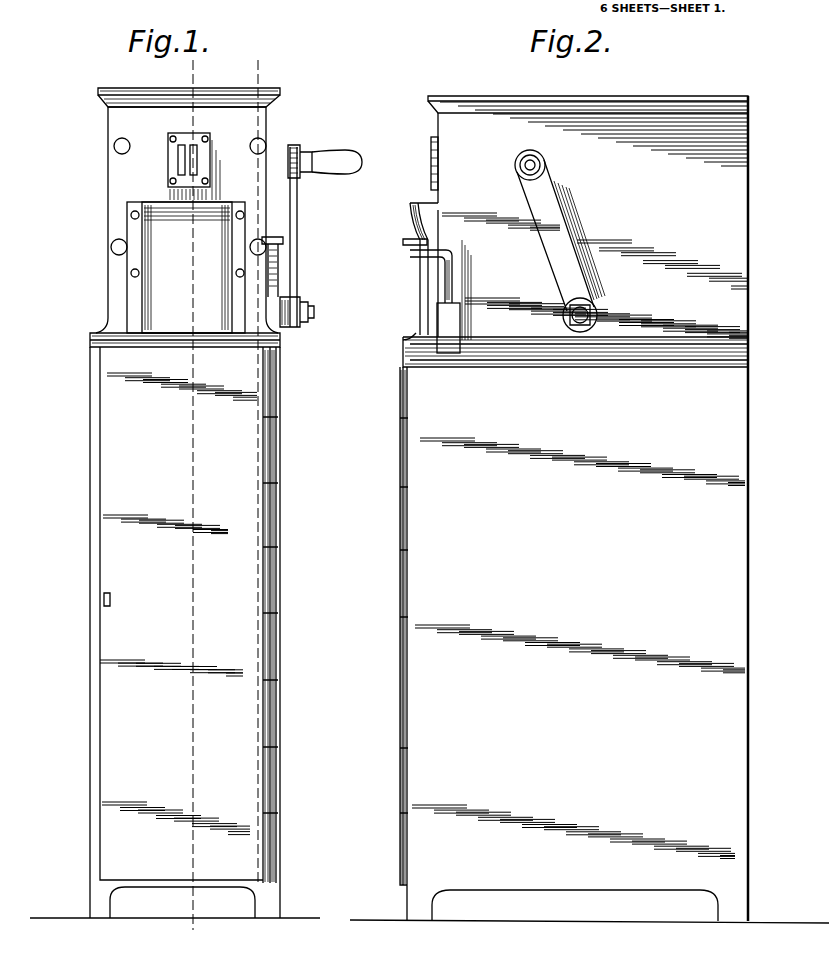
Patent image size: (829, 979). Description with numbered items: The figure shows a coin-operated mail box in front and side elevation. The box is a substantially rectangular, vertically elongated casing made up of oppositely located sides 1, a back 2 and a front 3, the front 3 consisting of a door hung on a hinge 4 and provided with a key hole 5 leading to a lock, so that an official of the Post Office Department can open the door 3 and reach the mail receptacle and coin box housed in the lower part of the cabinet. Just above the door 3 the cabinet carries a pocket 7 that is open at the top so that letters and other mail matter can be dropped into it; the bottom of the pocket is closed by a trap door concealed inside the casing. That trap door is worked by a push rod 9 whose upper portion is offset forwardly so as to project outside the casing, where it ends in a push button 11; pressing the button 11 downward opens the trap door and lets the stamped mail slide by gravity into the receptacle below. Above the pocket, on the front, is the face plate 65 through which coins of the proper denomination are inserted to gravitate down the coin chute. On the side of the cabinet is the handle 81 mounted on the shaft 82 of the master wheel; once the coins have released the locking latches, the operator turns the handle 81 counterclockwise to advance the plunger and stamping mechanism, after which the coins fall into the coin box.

In FIG. 1, the sides 1 is at (90, 494).
In FIG. 2, the sides 1 is at (589, 509).
In FIG. 2, the back 2 is at (748, 600).
In FIG. 1, the front 3 is at (248, 77).
In FIG. 2, the front 3 is at (402, 487).
In FIG. 1, the hinge 4 is at (183, 77).
In FIG. 2, the hinge 4 is at (402, 522).
In FIG. 1, the key hole 5 is at (110, 597).
In FIG. 1, the pocket 7 is at (186, 267).
In FIG. 2, the pocket 7 is at (428, 300).
In FIG. 1, the push rod 9 is at (279, 267).
In FIG. 2, the push rod 9 is at (444, 268).
In FIG. 1, the push button 11 is at (283, 238).
In FIG. 2, the push button 11 is at (410, 240).
In FIG. 1, the face plate 65 is at (206, 151).
In FIG. 2, the face plate 65 is at (430, 157).
In FIG. 1, the handle 81 is at (298, 196).
In FIG. 2, the handle 81 is at (544, 205).
In FIG. 1, the shaft 82 is at (314, 313).
In FIG. 2, the shaft 82 is at (575, 320).